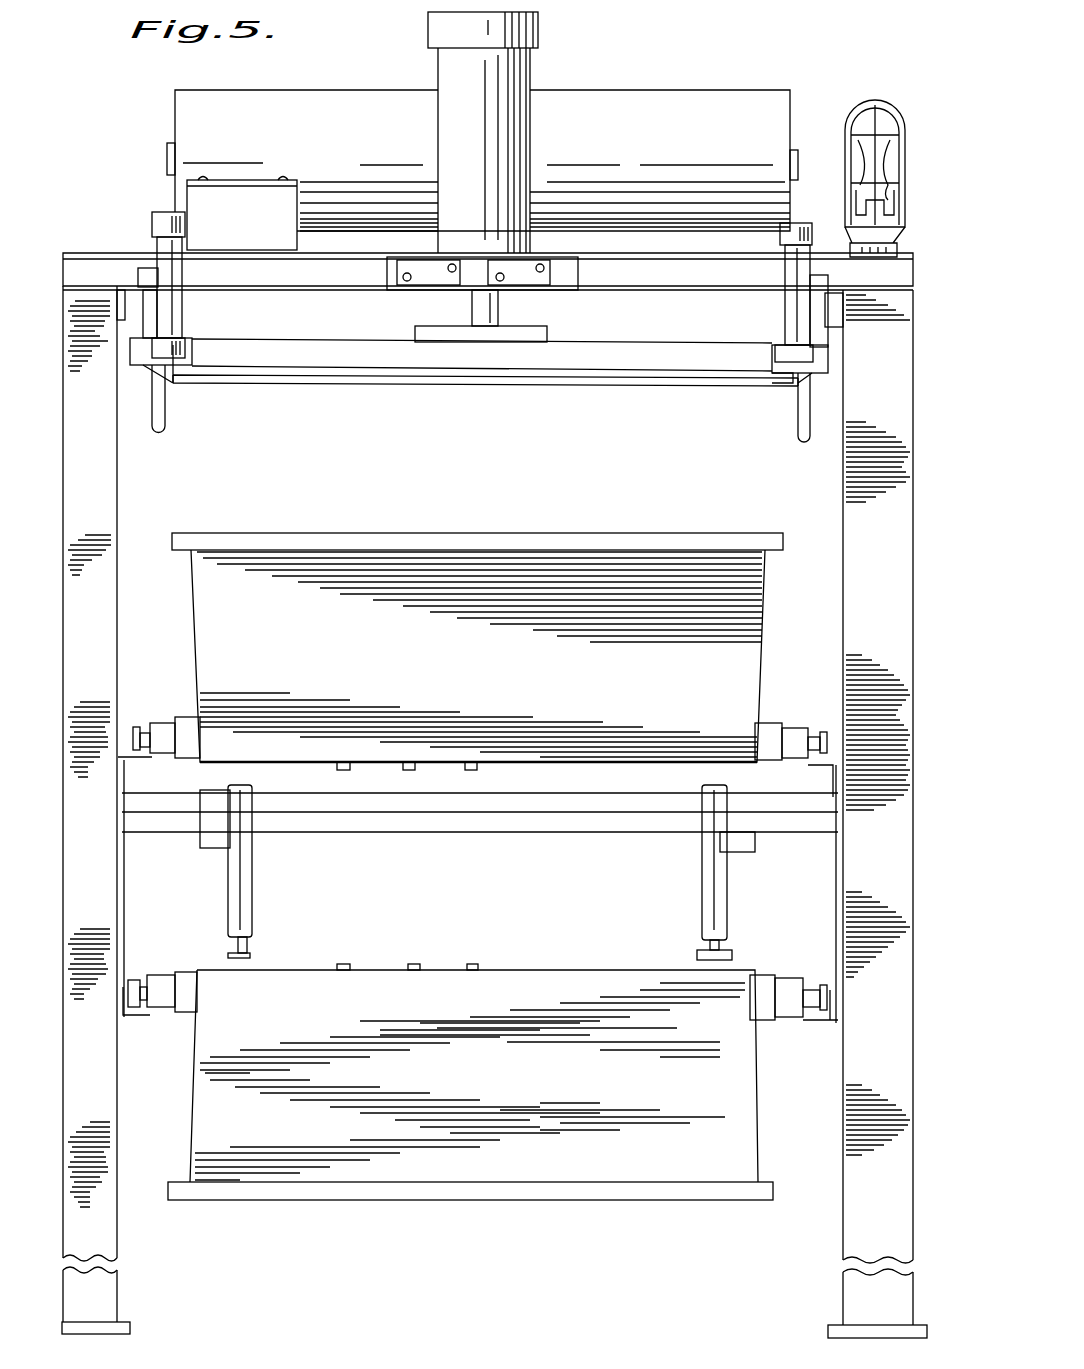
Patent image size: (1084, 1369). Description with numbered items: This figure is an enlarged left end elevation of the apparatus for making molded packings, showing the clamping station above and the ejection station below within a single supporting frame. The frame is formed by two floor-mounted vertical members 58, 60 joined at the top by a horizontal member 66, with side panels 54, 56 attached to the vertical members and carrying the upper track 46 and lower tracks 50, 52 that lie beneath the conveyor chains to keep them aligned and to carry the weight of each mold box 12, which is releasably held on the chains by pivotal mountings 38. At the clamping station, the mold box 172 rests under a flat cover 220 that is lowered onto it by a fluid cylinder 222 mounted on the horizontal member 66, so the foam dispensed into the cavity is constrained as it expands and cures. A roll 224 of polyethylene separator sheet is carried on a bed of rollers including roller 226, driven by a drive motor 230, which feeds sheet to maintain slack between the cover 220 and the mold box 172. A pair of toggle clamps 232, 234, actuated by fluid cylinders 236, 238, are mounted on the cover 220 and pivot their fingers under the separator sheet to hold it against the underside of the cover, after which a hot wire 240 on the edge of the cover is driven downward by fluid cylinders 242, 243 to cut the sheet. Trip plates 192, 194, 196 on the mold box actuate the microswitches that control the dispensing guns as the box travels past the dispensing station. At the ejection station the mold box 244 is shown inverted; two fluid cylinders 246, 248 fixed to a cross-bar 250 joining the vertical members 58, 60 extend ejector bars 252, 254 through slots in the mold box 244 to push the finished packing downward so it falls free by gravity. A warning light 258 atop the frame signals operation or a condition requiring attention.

The mold box 12 is at (570, 536).
The pivotal mounting 38 is at (163, 720).
The upper track 46 is at (830, 753).
The lower track 50 is at (827, 1023).
The lower track 52 is at (143, 1018).
The side panel 54 is at (835, 873).
The side panel 56 is at (118, 890).
The vertical member 58 is at (915, 592).
The vertical member 60 is at (120, 510).
The horizontal member 66 is at (98, 249).
The second mold box 172 is at (508, 687).
The trip plate 192 is at (475, 965).
The trip plate 194 is at (418, 965).
The trip plate 196 is at (347, 965).
The cover 220 is at (333, 357).
The fluid cylinder 222 is at (527, 77).
The roll of separator sheet 224 is at (733, 93).
The roller 226 is at (590, 232).
The drive motor 230 is at (202, 197).
The toggle clamp 232 is at (798, 413).
The toggle clamp 234 is at (167, 422).
The fluid cylinder 236 is at (788, 320).
The fluid cylinder 238 is at (182, 322).
The hot wire 240 is at (433, 385).
The fluid cylinder 242 is at (813, 298).
The fluid cylinder 243 is at (148, 298).
The mold box 244 is at (505, 1084).
The fluid cylinder 246 is at (710, 865).
The fluid cylinder 248 is at (252, 880).
The cross-bar 250 is at (448, 833).
The ejector bar 252 is at (703, 953).
The ejector bar 254 is at (253, 955).
The warning light 258 is at (883, 100).